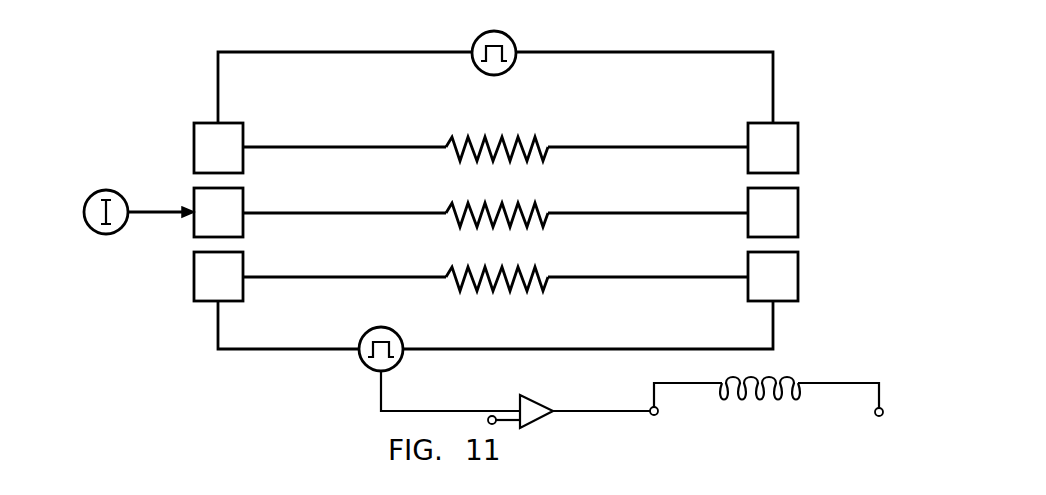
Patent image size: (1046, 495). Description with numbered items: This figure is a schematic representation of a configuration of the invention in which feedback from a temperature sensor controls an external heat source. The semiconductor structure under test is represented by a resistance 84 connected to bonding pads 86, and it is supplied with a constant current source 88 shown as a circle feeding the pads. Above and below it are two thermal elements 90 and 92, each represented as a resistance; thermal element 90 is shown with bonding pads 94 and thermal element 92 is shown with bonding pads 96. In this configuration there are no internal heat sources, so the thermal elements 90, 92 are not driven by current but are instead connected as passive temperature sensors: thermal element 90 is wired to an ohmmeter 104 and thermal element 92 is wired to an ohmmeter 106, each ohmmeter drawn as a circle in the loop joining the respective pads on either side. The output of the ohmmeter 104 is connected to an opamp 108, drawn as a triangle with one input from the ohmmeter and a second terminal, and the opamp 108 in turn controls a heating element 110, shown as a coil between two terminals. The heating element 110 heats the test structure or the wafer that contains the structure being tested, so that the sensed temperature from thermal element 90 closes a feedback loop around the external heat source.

The resistance 84 is at (504, 201).
The bonding pads 86 is at (218, 212).
The constant current source 88 is at (103, 192).
The thermal element 90 is at (504, 266).
The thermal element 92 is at (521, 137).
The bonding pads 94 is at (220, 288).
The bonding pads 96 is at (220, 158).
The ohmmeter 104 is at (396, 324).
The ohmmeter 106 is at (533, 50).
The opamp 108 is at (537, 394).
The heating element 110 is at (752, 416).